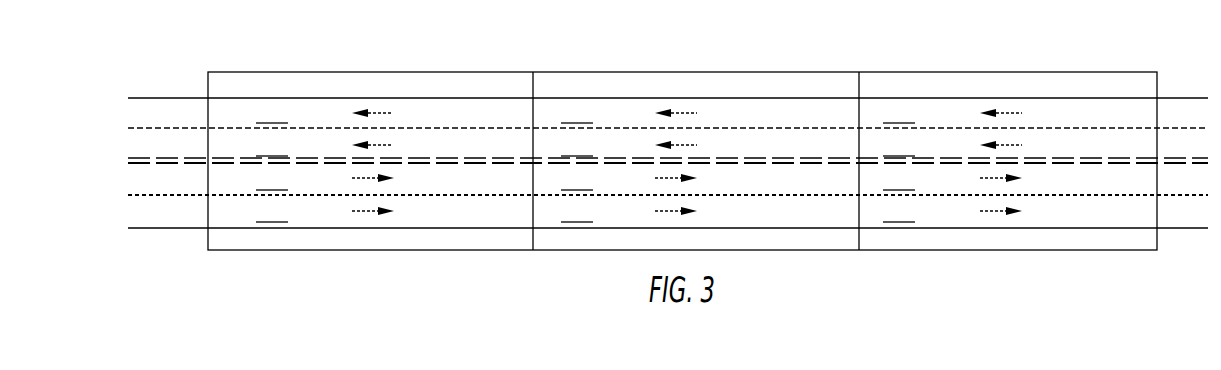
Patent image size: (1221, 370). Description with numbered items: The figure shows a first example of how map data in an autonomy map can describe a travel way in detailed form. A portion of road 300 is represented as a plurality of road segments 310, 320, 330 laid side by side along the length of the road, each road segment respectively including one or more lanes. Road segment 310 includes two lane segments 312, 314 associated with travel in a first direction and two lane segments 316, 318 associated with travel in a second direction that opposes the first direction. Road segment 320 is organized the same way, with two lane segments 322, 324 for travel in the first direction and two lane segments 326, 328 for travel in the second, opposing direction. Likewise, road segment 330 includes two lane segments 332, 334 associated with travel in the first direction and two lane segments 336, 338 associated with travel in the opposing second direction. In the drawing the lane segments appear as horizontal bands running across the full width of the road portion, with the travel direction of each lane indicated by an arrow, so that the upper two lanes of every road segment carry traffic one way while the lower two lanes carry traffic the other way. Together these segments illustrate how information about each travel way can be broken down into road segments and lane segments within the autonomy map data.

The portion of road 300 is at (667, 135).
The road segment 310 is at (370, 142).
The lane segment 312 is at (324, 112).
The lane segment 314 is at (324, 145).
The lane segment 316 is at (325, 179).
The lane segment 318 is at (325, 211).
The road segment 320 is at (696, 141).
The lane segment 322 is at (629, 112).
The lane segment 324 is at (629, 145).
The lane segment 326 is at (629, 179).
The lane segment 328 is at (629, 211).
The road segment 330 is at (1008, 141).
The lane segment 332 is at (952, 112).
The lane segment 334 is at (952, 145).
The lane segment 336 is at (952, 179).
The lane segment 338 is at (952, 211).